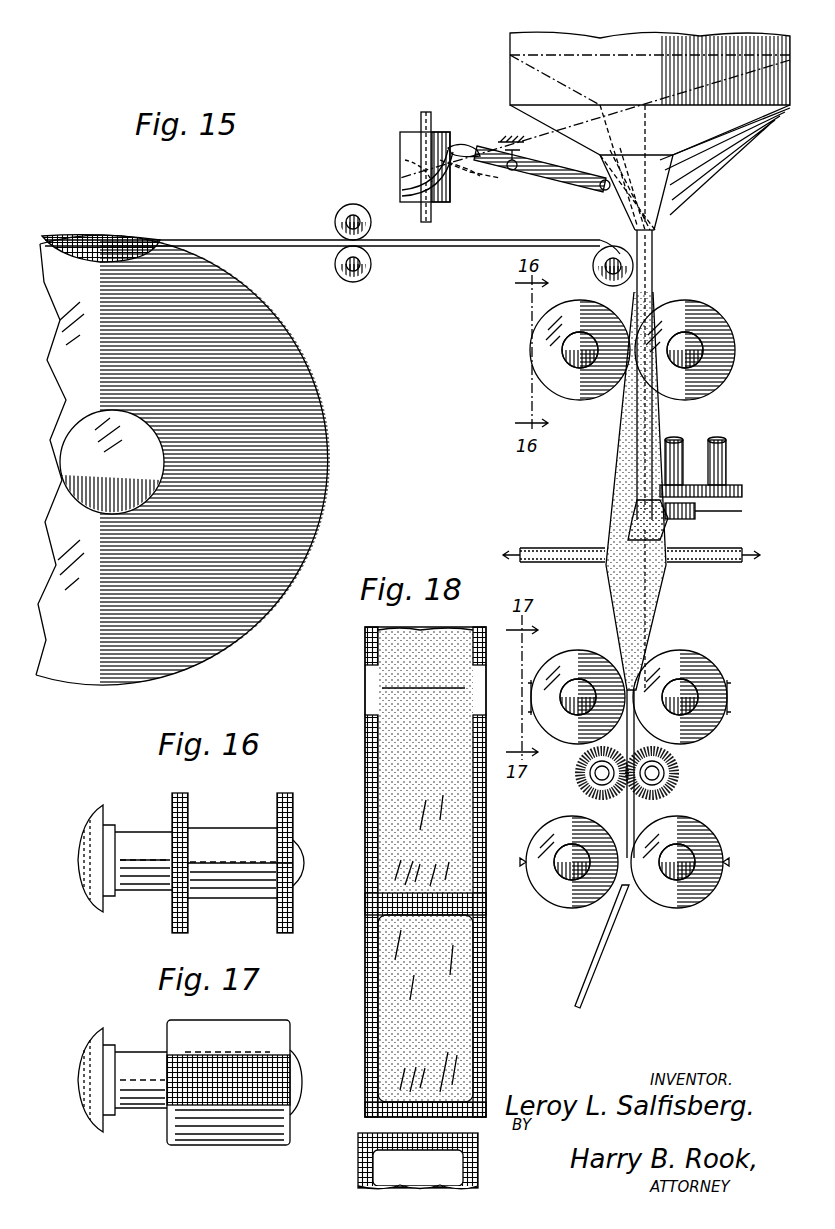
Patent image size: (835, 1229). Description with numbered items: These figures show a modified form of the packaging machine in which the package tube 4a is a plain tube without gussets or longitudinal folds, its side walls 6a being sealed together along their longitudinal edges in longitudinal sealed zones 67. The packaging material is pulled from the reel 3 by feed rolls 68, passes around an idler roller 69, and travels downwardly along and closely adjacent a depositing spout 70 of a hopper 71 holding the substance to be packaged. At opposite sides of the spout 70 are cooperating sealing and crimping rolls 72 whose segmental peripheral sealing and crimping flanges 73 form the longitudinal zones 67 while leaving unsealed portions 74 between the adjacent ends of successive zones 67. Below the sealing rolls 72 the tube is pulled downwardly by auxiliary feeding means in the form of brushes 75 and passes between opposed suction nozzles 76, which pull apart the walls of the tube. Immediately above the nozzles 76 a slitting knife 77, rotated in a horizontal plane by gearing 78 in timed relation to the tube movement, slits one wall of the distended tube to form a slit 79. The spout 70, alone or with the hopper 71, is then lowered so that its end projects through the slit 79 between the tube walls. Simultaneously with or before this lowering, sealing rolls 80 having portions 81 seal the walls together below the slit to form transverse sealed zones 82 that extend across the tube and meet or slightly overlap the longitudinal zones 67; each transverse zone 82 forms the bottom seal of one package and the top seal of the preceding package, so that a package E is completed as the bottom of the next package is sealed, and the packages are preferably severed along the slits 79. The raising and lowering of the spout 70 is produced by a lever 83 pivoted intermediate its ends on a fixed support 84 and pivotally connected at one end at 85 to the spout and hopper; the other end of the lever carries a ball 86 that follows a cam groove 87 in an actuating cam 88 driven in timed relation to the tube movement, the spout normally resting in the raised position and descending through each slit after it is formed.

In FIG. 15, the reel 3 is at (318, 458).
In FIG. 15, the package tube 4a is at (210, 230).
In FIG. 18, the package tube 4a is at (395, 618).
In FIG. 15, the feed rolls 68 is at (358, 280).
In FIG. 15, the actuating cam 88 is at (415, 123).
In FIG. 15, the cam groove 87 is at (404, 188).
In FIG. 15, the ball 86 is at (455, 146).
In FIG. 15, the lever 83 is at (560, 178).
In FIG. 15, the fixed support 84 is at (512, 172).
In FIG. 15, the pivotal connection 85 is at (603, 192).
In FIG. 15, the hopper 71 is at (512, 60).
In FIG. 15, the idler roller 69 is at (654, 250).
In FIG. 15, the depositing spout 70 is at (636, 270).
In FIG. 15, the sealing and crimping rolls 72 is at (712, 325).
In FIG. 16, the sealing and crimping rolls 72 is at (254, 822).
In FIG. 16, the segmental peripheral sealing and crimping flanges 73 is at (186, 806).
In FIG. 15, the gearing 78 is at (740, 486).
In FIG. 15, the slitting knife 77 is at (722, 511).
In FIG. 15, the slit 79 is at (648, 512).
In FIG. 18, the slit 79 is at (400, 690).
In FIG. 15, the suction nozzles 76 is at (590, 548).
In FIG. 15, the side walls 6a is at (612, 595).
In FIG. 15, the longitudinal sealed zones 67 is at (622, 606).
In FIG. 18, the longitudinal sealed zones 67 is at (366, 648).
In FIG. 15, the sealing rolls 80 is at (582, 655).
In FIG. 17, the sealing rolls 80 is at (170, 1022).
In FIG. 15, the sealing portions 81 is at (648, 670).
In FIG. 17, the sealing portions 81 is at (292, 1052).
In FIG. 15, the brushes 75 is at (676, 780).
In FIG. 15, the package E is at (649, 816).
In FIG. 18, the package E is at (462, 990).
In FIG. 18, the unsealed portions 74 is at (370, 680).
In FIG. 18, the transverse sealed zones 82 is at (422, 840).